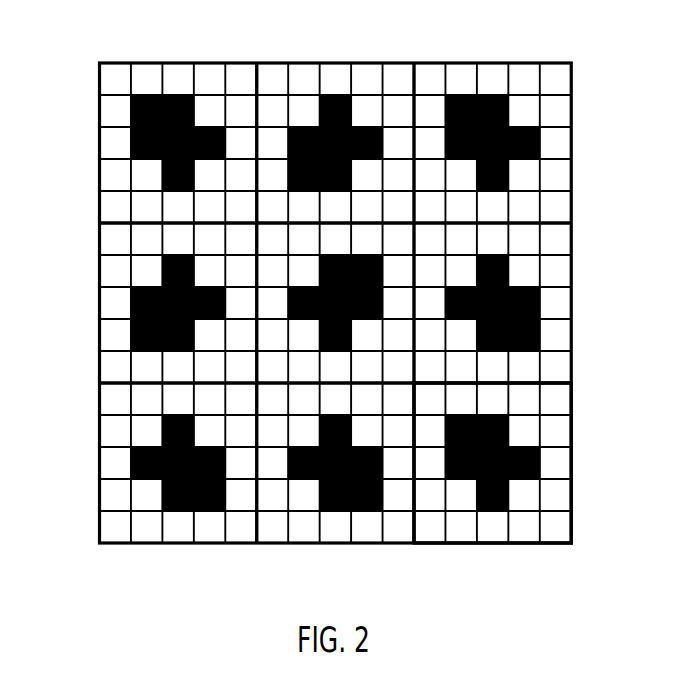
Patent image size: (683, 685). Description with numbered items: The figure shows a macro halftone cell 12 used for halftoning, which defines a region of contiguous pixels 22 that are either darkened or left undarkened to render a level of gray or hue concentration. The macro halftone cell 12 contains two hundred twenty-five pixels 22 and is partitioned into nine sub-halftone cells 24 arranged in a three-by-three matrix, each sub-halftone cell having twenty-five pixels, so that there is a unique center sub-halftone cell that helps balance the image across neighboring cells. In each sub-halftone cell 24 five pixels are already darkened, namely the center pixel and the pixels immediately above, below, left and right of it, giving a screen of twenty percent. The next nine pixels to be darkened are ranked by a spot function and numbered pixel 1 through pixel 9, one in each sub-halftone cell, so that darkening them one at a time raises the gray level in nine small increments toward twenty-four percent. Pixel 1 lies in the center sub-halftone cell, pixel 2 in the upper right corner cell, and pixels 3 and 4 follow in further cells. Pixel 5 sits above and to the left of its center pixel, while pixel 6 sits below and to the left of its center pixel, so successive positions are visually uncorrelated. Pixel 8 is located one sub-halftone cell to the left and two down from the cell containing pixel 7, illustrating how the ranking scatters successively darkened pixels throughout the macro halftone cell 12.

The macro halftone cell 12 is at (84, 273).
The pixels 22 is at (212, 76).
The sub-halftone cells 24 is at (412, 553).
The pixel 1 is at (335, 303).
The pixel 2 is at (492, 143).
The pixel 3 is at (335, 463).
The pixel 4 is at (492, 303).
The pixel 5 is at (178, 143).
The pixel 6 is at (178, 303).
The pixel 7 is at (335, 143).
The pixel 8 is at (178, 463).
The pixel 9 is at (492, 463).